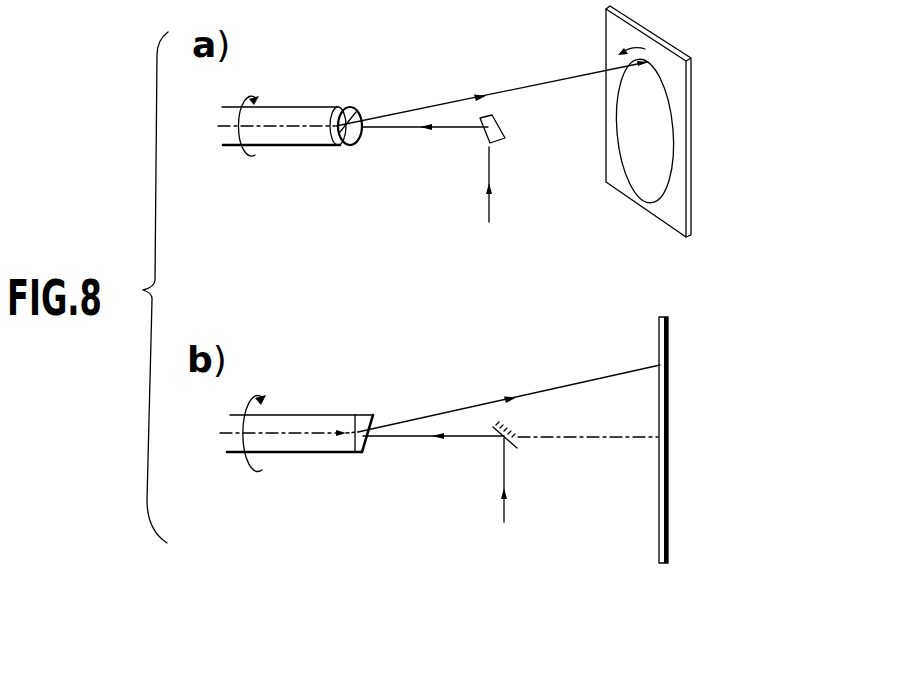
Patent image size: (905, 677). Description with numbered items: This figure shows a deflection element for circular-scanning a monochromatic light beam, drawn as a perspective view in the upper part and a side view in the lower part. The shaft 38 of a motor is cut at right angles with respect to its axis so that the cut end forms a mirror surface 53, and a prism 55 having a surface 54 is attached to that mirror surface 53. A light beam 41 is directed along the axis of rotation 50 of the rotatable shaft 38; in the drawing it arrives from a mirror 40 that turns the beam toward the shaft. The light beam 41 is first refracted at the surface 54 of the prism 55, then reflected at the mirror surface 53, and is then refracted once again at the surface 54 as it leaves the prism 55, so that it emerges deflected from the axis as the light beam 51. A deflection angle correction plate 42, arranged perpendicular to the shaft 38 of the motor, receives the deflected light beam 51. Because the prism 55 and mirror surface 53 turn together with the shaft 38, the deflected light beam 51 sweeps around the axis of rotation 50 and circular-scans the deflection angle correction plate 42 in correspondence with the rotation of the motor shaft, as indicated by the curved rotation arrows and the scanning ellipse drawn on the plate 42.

The shaft 38 is at (280, 108).
The mirror 40 is at (503, 140).
The light beam 41 is at (455, 128).
The deflection angle correction plate 42 is at (671, 63).
The axis of rotation 50 is at (277, 127).
The deflected light beam 51 is at (458, 97).
The mirror surface 53 is at (343, 107).
The prism surface 54 is at (346, 120).
The prism 55 is at (353, 144).